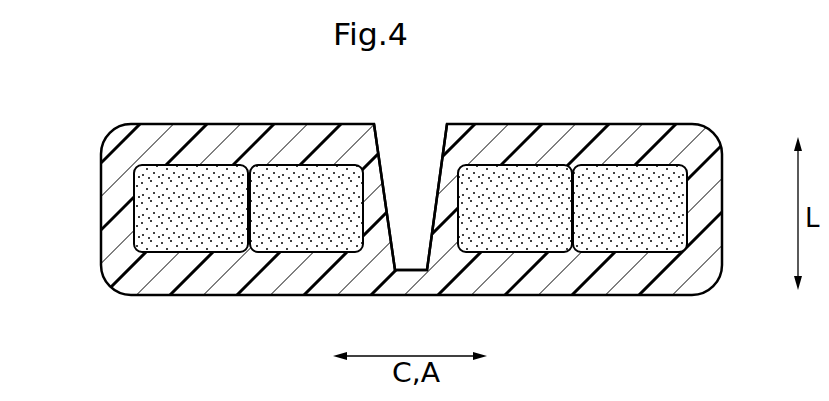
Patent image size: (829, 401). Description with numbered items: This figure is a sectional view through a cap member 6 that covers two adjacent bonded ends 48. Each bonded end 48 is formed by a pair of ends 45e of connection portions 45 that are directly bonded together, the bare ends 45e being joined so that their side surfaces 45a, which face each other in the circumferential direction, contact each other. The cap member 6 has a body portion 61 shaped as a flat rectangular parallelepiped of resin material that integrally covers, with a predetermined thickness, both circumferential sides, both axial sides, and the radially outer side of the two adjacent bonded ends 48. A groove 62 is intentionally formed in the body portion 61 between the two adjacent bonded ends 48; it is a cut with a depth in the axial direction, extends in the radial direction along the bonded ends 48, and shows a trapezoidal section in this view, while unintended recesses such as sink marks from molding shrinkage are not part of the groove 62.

The cap member 6 is at (100, 151).
The connection portion 45 is at (410, 211).
The side surface 45a is at (247, 216).
The end 45e is at (290, 243).
The bonded end 48 is at (272, 152).
The body portion 61 is at (538, 278).
The groove 62 is at (410, 160).